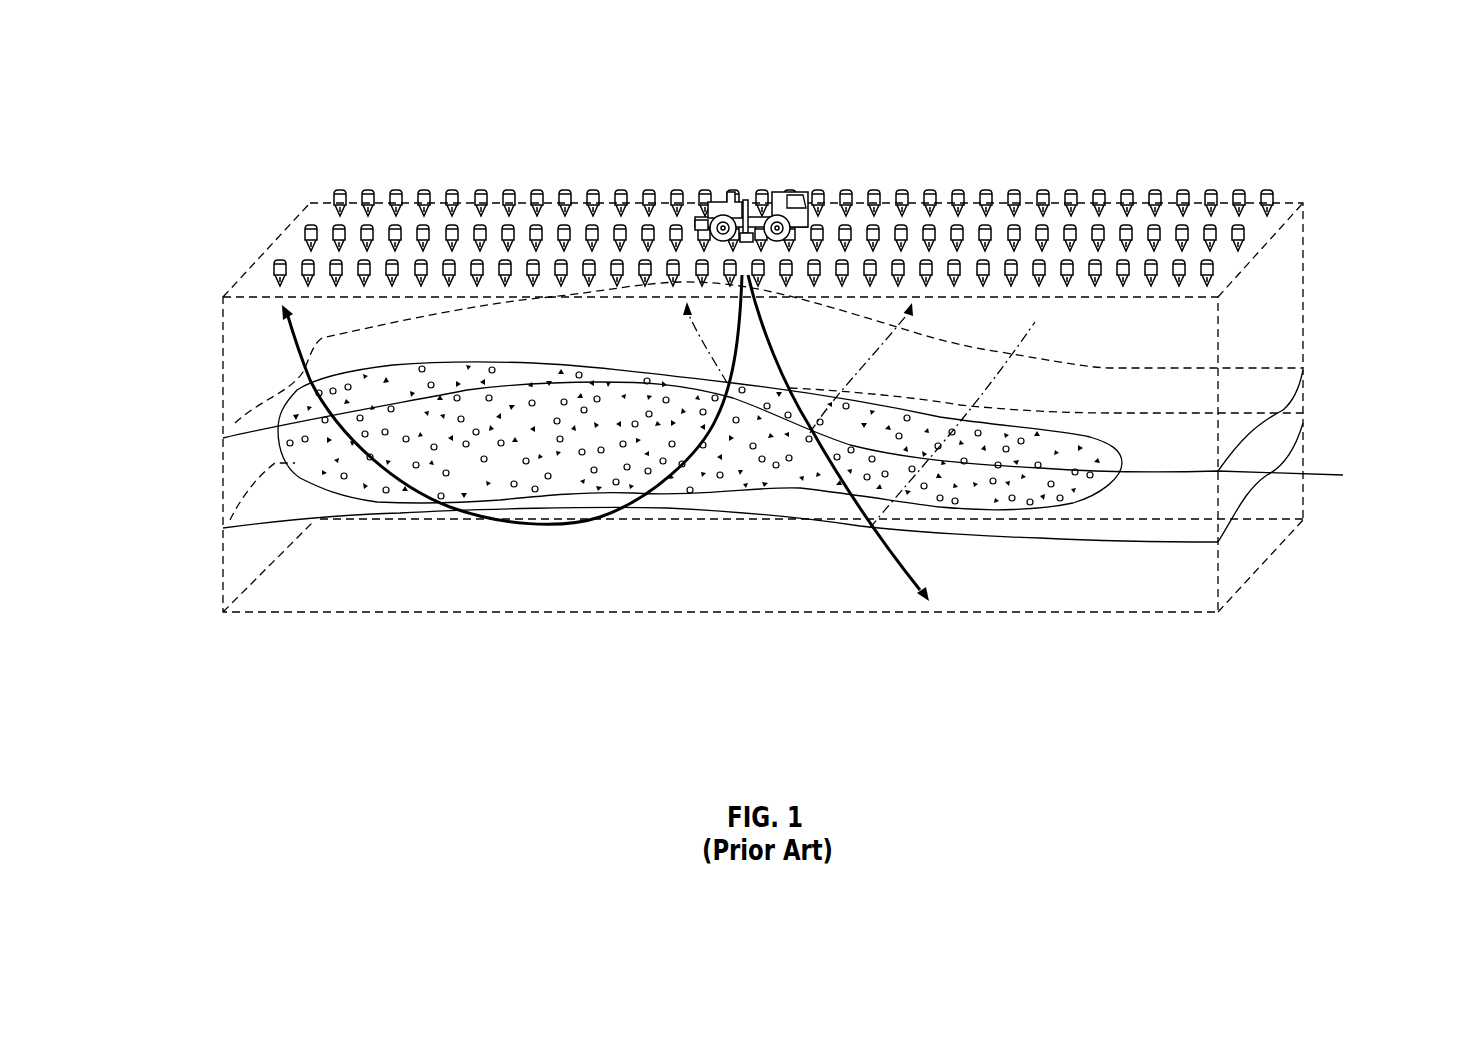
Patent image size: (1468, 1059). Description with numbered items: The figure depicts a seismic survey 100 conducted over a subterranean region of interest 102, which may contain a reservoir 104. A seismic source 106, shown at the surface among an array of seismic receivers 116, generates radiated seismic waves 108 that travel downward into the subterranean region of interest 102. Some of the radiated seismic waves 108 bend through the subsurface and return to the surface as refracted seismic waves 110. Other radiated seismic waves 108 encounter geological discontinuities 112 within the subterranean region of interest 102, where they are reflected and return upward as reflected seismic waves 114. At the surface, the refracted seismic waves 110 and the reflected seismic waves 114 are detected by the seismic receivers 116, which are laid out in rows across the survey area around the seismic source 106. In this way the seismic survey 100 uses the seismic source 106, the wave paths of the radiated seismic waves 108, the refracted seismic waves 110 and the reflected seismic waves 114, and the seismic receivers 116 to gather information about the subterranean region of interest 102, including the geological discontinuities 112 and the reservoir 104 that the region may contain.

The seismic survey 100 is at (1215, 114).
The subterranean region of interest 102 is at (1098, 637).
The reservoir 104 is at (1052, 448).
The seismic source 106 is at (750, 172).
The radiated seismic waves 108 is at (893, 594).
The refracted seismic waves 110 is at (395, 497).
The geological discontinuities 112 is at (307, 438).
The reflected seismic waves 114 is at (905, 358).
The seismic receivers 116 is at (1043, 183).